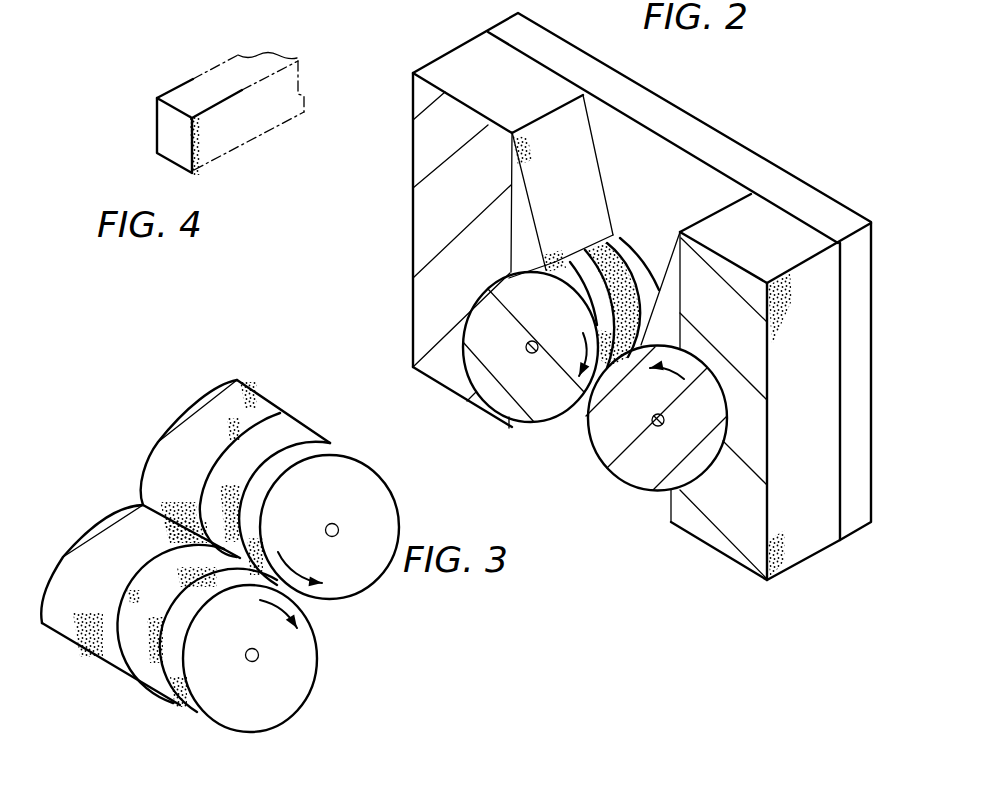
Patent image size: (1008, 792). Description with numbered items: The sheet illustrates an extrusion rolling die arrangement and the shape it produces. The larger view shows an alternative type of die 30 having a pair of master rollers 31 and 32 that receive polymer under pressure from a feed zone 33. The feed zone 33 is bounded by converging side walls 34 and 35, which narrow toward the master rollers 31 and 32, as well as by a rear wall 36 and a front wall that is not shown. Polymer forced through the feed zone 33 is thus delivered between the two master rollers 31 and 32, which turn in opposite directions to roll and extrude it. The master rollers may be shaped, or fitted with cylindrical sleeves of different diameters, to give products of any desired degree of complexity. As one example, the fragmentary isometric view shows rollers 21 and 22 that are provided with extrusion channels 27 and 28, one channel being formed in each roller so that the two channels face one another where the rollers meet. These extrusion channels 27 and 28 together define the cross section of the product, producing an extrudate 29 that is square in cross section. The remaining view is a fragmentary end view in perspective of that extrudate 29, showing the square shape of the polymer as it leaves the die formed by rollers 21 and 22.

In FIG. 3, the roller 21 is at (239, 634).
In FIG. 3, the roller 22 is at (363, 508).
In FIG. 3, the extrusion channel 27 is at (161, 624).
In FIG. 3, the extrusion channel 28 is at (283, 482).
In FIG. 4, the extrudate 29 is at (161, 112).
In FIG. 2, the die 30 is at (699, 99).
In FIG. 2, the master roller 31 is at (514, 364).
In FIG. 2, the master roller 32 is at (641, 422).
In FIG. 2, the feed zone 33 is at (665, 200).
In FIG. 2, the converging side wall 34 is at (572, 191).
In FIG. 2, the converging side wall 35 is at (704, 208).
In FIG. 2, the rear wall 36 is at (764, 172).